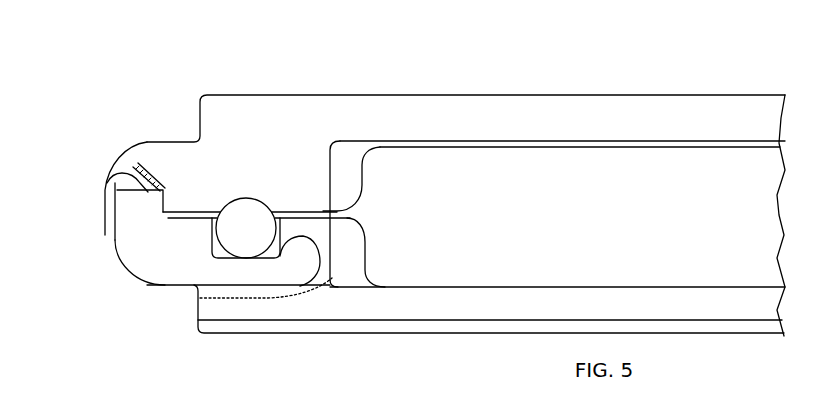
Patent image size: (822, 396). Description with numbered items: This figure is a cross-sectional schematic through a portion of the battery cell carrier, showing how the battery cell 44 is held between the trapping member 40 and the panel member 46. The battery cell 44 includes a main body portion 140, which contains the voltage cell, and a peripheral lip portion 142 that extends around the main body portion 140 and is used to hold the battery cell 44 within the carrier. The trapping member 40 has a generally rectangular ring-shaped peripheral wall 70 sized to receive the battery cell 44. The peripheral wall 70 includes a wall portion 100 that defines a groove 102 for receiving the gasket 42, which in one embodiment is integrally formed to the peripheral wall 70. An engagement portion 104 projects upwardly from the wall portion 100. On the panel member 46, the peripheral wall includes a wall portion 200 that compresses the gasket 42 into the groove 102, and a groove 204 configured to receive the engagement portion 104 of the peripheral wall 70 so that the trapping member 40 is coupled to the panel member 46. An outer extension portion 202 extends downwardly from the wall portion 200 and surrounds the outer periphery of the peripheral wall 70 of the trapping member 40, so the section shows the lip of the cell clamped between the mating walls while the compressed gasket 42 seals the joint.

The trapping member 40 is at (160, 288).
The gasket 42 is at (247, 198).
The battery cell 44 is at (486, 229).
The panel member 46 is at (546, 93).
The peripheral wall 70 is at (131, 270).
The wall portion 100 is at (152, 262).
The groove 102 is at (313, 256).
The engagement portion 104 is at (107, 182).
The main body portion 140 is at (415, 270).
The peripheral lip portion 142 is at (303, 210).
The wall portion 200 is at (315, 172).
The outer extension portion 202 is at (112, 222).
The groove 204 is at (115, 183).